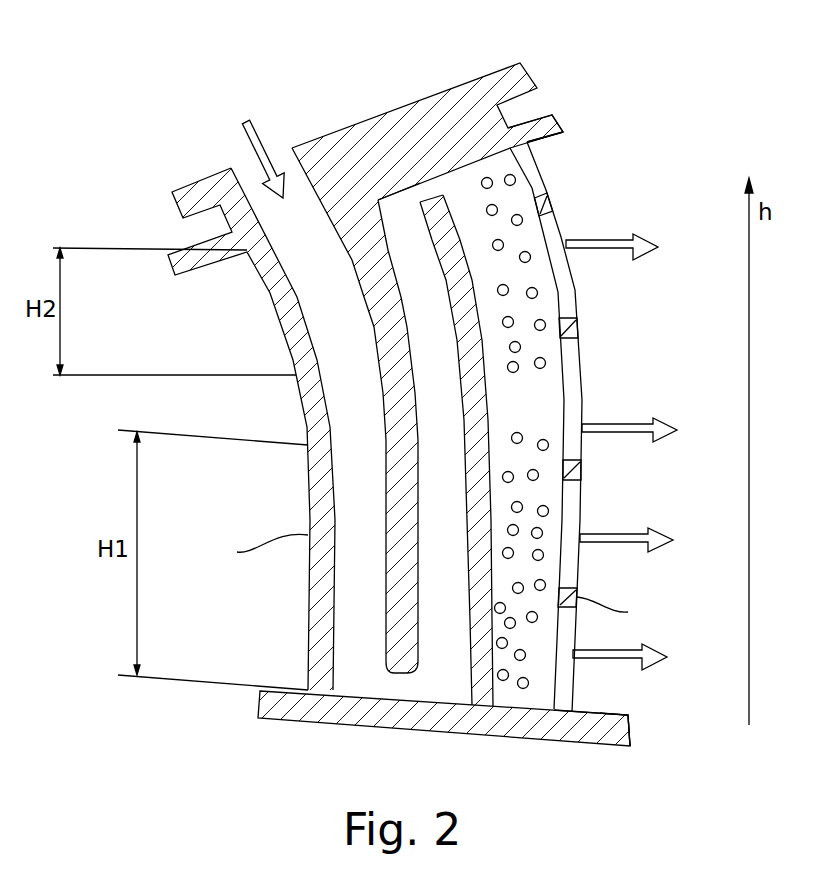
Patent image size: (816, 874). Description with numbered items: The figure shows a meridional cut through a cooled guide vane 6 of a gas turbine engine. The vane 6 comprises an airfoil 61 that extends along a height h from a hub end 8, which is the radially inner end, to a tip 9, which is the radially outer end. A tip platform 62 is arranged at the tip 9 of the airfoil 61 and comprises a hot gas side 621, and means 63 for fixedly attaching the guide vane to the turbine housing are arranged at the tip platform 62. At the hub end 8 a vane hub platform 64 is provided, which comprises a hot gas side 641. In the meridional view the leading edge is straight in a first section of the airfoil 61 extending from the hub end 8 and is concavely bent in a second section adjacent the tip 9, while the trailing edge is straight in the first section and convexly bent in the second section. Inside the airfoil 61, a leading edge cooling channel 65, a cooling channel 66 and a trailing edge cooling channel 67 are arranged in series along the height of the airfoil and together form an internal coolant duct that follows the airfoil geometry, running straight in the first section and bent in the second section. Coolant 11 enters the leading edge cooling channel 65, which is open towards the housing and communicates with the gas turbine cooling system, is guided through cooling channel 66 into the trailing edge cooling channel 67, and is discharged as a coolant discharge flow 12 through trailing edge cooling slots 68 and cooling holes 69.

The guide vane 6 is at (443, 419).
The hub end 8 is at (343, 690).
The tip 9 is at (382, 207).
The coolant 11 is at (258, 147).
The coolant discharge flow 12 is at (650, 238).
The airfoil 61 is at (308, 623).
The tip platform 62 is at (563, 127).
The means for fixedly attaching the guide vane to the turbine housing 63 is at (527, 80).
The vane hub platform 64 is at (523, 727).
The leading edge cooling channel 65 is at (338, 285).
The cooling channel 66 is at (455, 362).
The trailing edge cooling channel 67 is at (549, 415).
The trailing edge cooling slots 68 is at (567, 292).
The cooling holes 69 is at (500, 553).
The hot gas side 621 is at (547, 143).
The hot gas side 641 is at (627, 712).